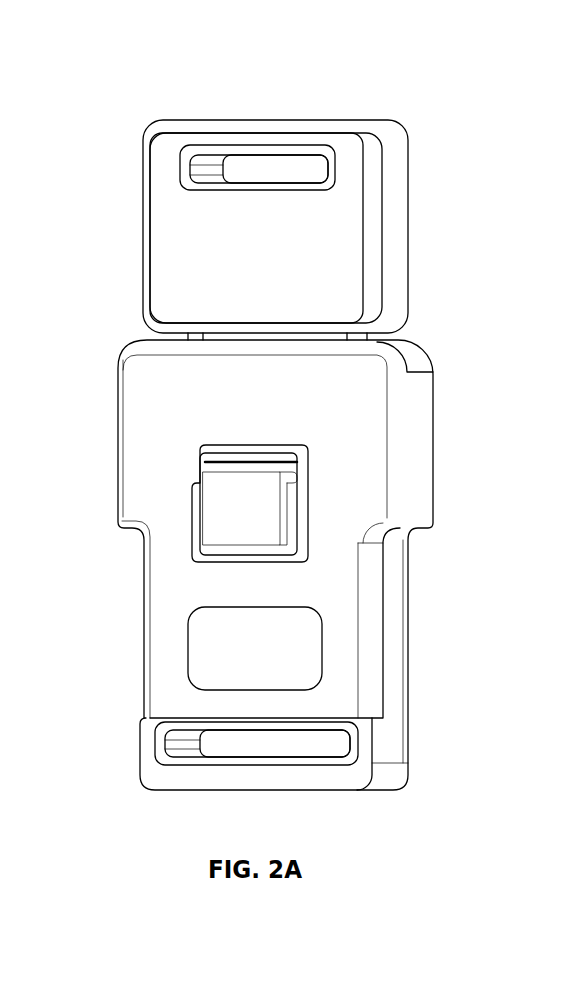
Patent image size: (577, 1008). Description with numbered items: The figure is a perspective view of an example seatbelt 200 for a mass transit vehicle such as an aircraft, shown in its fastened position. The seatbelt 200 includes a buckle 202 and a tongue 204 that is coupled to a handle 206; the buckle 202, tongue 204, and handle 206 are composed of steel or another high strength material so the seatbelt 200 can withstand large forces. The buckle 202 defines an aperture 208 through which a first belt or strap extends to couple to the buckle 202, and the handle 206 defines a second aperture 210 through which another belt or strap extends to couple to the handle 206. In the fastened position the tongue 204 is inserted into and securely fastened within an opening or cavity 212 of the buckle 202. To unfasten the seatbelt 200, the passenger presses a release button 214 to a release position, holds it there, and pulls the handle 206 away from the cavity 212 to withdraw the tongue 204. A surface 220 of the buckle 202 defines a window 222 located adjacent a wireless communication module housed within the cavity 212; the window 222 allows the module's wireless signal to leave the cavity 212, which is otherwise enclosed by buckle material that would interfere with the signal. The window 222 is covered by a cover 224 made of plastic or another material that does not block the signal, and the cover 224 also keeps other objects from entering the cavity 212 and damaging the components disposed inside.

The seatbelt 200 is at (432, 90).
The buckle 202 is at (160, 393).
The tongue 204 is at (202, 337).
The handle 206 is at (173, 245).
The aperture 208 is at (233, 740).
The aperture 210 is at (269, 170).
The cavity 212 is at (414, 327).
The release button 214 is at (225, 518).
The surface 220 is at (172, 682).
The window 222 is at (210, 646).
The cover 224 is at (282, 648).